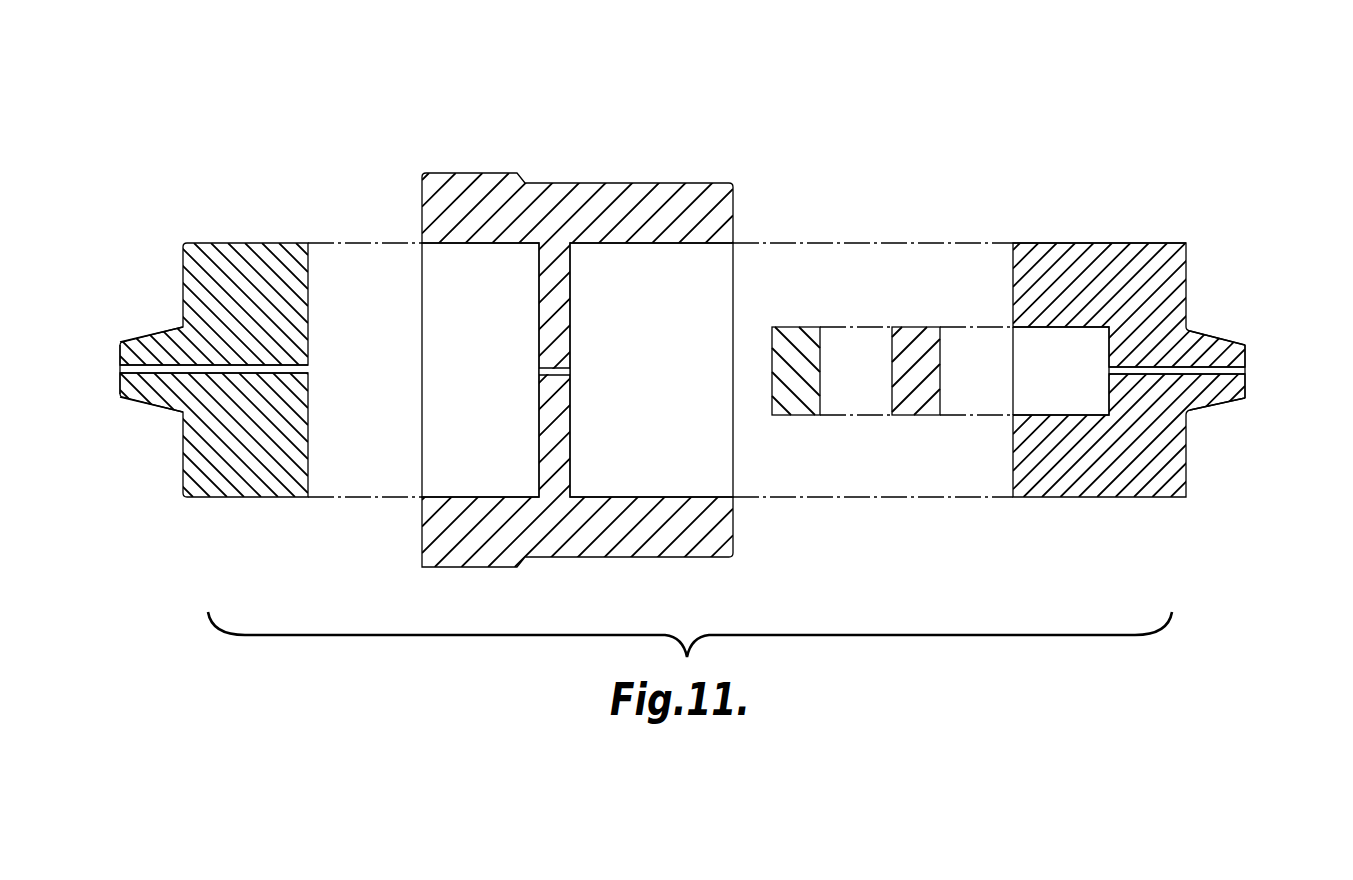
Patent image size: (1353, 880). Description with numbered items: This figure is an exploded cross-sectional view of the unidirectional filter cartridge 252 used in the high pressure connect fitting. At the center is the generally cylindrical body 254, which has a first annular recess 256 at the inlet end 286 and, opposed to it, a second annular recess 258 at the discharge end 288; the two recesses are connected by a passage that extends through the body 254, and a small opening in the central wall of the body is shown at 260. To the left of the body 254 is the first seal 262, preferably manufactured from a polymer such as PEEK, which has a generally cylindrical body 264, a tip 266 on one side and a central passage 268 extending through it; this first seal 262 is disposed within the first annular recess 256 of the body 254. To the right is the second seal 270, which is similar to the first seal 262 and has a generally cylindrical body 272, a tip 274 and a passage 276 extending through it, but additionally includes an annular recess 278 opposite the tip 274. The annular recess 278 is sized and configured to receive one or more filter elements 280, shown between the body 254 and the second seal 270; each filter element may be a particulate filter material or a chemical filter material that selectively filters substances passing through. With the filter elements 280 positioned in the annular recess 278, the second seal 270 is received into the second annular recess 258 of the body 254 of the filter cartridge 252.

The unidirectional filter cartridge 252 is at (840, 102).
The body 254 is at (566, 183).
The first annular recess 256 is at (437, 325).
The second annular recess 258 is at (715, 413).
The aperture in divider wall 260 is at (539, 368).
The first seal 262 is at (222, 243).
The body 264 is at (243, 497).
The tip 266 is at (147, 336).
The central passage 268 is at (150, 372).
The second seal 270 is at (1135, 497).
The body 272 is at (1103, 243).
The tip 274 is at (1227, 340).
The passage 276 is at (1217, 373).
The annular recess 278 is at (1025, 387).
The filter elements 280 is at (795, 327).
The inlet end 286 is at (131, 203).
The discharge end 288 is at (1283, 203).